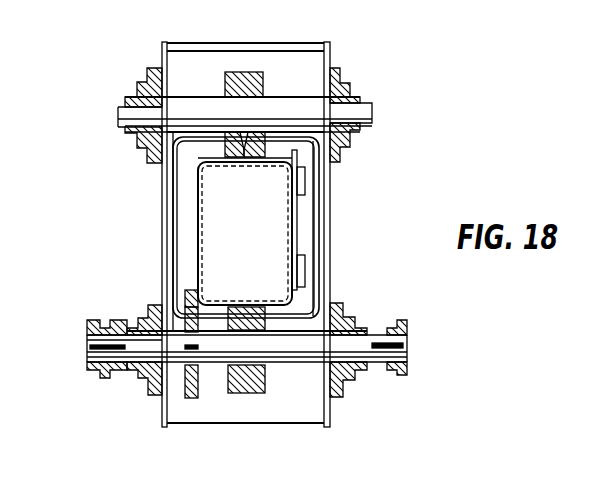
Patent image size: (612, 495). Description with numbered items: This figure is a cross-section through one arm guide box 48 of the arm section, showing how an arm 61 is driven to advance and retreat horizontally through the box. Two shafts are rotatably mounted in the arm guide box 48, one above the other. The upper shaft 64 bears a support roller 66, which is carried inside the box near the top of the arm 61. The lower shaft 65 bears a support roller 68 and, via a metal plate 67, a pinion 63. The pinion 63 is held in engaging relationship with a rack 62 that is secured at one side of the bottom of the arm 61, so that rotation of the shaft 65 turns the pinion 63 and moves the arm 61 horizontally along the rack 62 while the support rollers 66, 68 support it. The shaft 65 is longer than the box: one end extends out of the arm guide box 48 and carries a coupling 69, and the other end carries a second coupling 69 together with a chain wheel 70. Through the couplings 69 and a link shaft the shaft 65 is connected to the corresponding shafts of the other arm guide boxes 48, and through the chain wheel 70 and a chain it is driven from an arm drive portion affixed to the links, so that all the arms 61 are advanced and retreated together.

The arm guide box 48 is at (340, 230).
The arm 61 is at (188, 195).
The rack 62 is at (189, 286).
The pinion 63 is at (198, 387).
The shaft 64 is at (372, 110).
The shaft 65 is at (407, 338).
The support roller 66 is at (263, 80).
The metal plate 67 is at (350, 378).
The support roller 68 is at (253, 393).
The coupling 69 is at (87, 373).
The chain wheel 70 is at (123, 378).